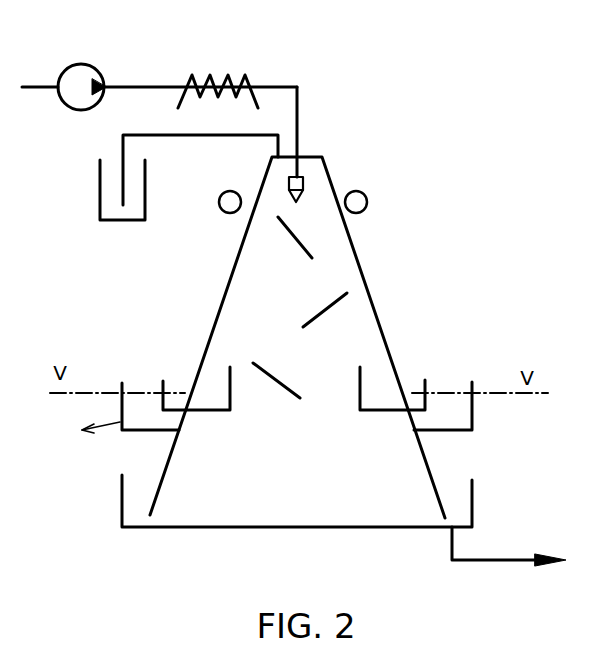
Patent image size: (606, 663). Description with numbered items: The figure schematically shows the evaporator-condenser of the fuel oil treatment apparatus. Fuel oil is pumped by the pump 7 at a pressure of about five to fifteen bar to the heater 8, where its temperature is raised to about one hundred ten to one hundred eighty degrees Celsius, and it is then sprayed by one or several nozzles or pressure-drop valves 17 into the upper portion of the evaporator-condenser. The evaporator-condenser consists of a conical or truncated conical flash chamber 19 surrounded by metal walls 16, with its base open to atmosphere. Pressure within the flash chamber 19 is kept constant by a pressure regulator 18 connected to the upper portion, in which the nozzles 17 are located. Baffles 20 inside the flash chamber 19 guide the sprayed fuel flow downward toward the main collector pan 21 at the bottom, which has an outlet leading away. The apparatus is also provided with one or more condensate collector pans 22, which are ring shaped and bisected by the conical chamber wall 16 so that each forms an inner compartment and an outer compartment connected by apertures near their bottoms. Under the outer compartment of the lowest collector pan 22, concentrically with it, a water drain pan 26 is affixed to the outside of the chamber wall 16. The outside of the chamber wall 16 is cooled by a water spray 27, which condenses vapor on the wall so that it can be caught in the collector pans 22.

The pump 7 is at (78, 72).
The heater 8 is at (210, 72).
The metal walls 16 is at (362, 265).
The nozzles or pressure-drop valves 17 is at (299, 177).
The pressure regulator 18 is at (115, 223).
The flash chamber 19 is at (267, 283).
The baffles 20 is at (287, 388).
The main collector pan 21 is at (474, 510).
The condensate collector pans 22 is at (427, 383).
The water drain pan 26 is at (474, 414).
The water spray 27 is at (367, 200).